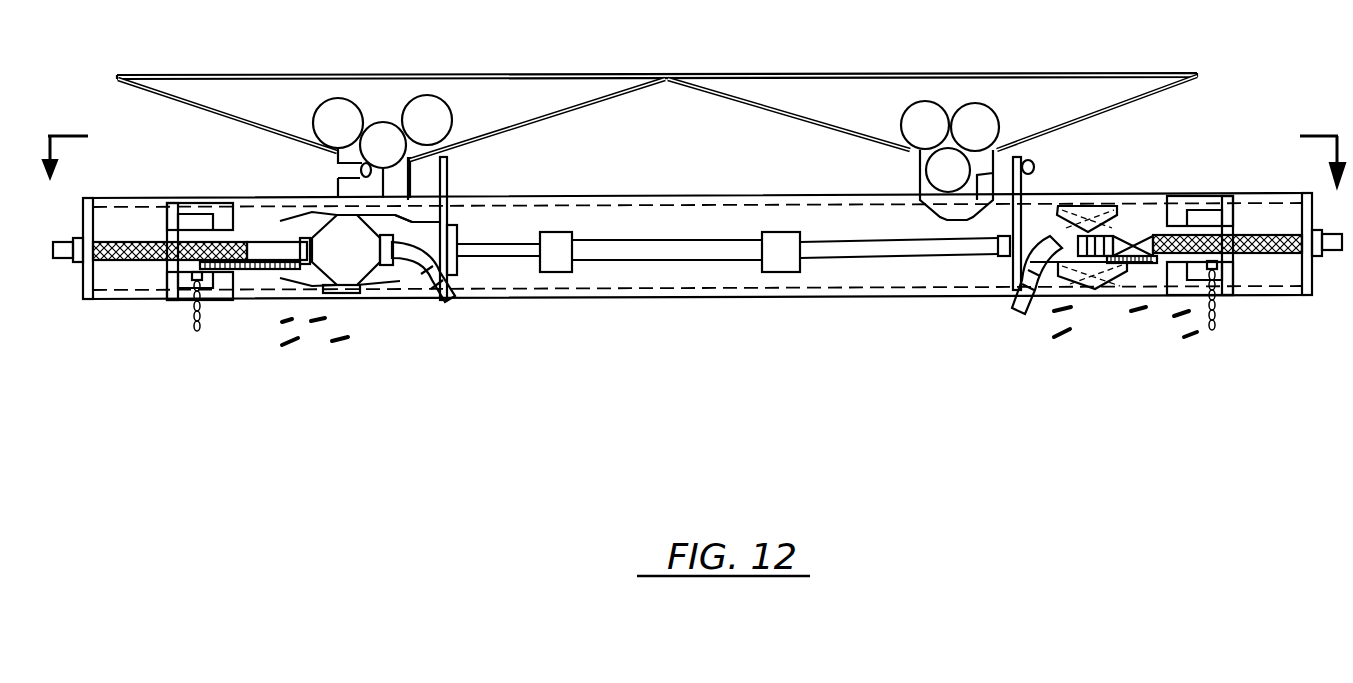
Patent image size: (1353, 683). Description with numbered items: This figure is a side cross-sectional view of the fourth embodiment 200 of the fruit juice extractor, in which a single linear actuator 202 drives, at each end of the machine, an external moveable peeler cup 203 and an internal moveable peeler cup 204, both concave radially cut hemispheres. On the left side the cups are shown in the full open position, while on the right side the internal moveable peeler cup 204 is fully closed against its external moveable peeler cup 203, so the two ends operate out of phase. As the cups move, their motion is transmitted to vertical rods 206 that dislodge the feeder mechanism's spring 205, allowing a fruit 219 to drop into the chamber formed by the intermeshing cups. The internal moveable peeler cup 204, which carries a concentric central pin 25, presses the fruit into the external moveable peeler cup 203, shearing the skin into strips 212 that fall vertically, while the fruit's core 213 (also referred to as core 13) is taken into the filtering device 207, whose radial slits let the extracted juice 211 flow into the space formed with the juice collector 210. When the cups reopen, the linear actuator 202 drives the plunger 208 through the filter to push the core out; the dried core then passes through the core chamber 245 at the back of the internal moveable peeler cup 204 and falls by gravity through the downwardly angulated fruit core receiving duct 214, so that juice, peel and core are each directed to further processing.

The fourth embodiment 200 is at (696, 74).
The fruit's core 13 is at (694, 161).
The fruit 219 is at (920, 127).
The feeder mechanism's spring 205 is at (340, 176).
The core chamber 245 is at (413, 237).
The fruit core receiving duct 214 is at (453, 287).
The concentric central pin 25 is at (452, 246).
The linear actuator 202 is at (688, 262).
The internal moveable peeler cup 204 is at (397, 277).
The fruit's core 213 is at (1007, 320).
The vertical rod 206 is at (1075, 206).
The filtering device 207 is at (1140, 268).
The external moveable peeler cup 203 is at (273, 276).
The plunger 208 is at (95, 262).
The juice collector 210 is at (187, 313).
The extracted juice 211 is at (197, 325).
The sheared skin strips 212 is at (348, 337).